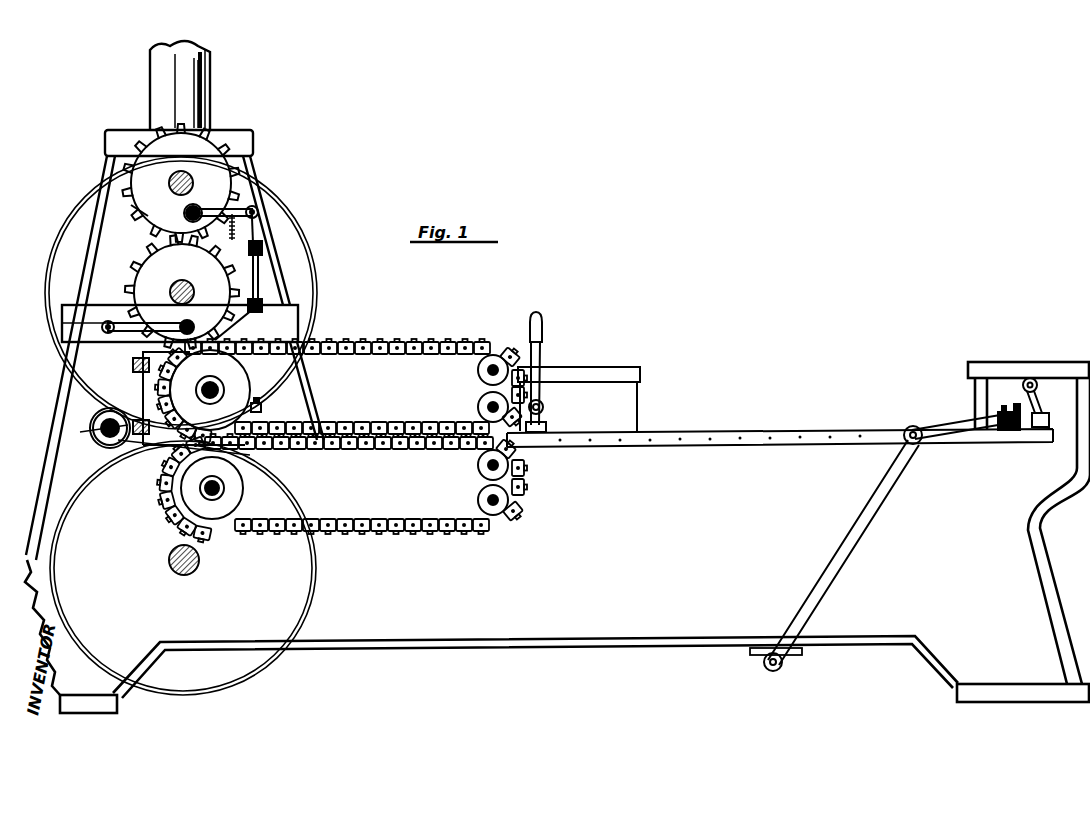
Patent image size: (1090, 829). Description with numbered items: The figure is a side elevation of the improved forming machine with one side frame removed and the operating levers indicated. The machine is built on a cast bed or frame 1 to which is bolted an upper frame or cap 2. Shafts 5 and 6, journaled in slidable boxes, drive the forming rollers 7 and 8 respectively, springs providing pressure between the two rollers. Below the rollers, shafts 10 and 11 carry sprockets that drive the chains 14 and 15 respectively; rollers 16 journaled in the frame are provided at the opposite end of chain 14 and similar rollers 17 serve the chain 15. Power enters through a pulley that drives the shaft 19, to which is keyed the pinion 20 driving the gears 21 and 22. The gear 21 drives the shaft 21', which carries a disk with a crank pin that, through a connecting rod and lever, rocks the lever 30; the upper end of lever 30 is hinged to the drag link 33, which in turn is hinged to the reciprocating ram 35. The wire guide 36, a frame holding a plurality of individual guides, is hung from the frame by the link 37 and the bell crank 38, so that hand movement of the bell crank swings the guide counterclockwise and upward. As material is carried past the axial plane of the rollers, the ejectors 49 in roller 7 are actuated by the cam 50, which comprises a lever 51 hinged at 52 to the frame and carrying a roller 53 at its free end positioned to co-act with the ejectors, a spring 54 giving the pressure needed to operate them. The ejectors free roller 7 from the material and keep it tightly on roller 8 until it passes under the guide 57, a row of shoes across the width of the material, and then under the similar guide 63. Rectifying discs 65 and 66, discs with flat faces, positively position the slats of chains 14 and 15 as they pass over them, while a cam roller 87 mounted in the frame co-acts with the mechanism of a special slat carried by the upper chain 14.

The bed or frame 1 is at (476, 644).
The upper frame or cap 2 is at (106, 161).
The shaft 5 is at (190, 176).
The shaft 6 is at (170, 288).
The forming roller 7 is at (191, 183).
The forming roller 8 is at (182, 292).
The shaft 10 is at (218, 386).
The shaft 11 is at (222, 489).
The chain 14 is at (380, 356).
The chain 15 is at (346, 520).
The rollers 16 is at (486, 405).
The rollers 17 is at (486, 466).
The shaft 19 is at (104, 434).
The pinion 20 is at (95, 426).
The gear 21 is at (197, 568).
The shaft 21' is at (204, 560).
The gear 22 is at (76, 214).
The lever 30 is at (880, 502).
The drag link 33 is at (955, 428).
The reciprocating ram 35 is at (1008, 412).
The wire guide 36 is at (738, 436).
The link 37 is at (1041, 404).
The bell crank 38 is at (543, 330).
The ejectors 49 is at (143, 210).
The cam 50 is at (203, 202).
The lever 51 is at (250, 185).
The hinge 52 is at (254, 206).
The roller 53 is at (187, 210).
The spring 54 is at (262, 230).
The guide 57 is at (258, 280).
The guide 63 is at (155, 383).
The rectifying disc 65 is at (240, 394).
The rectifying disc 66 is at (232, 474).
The cam roller 87 is at (260, 412).